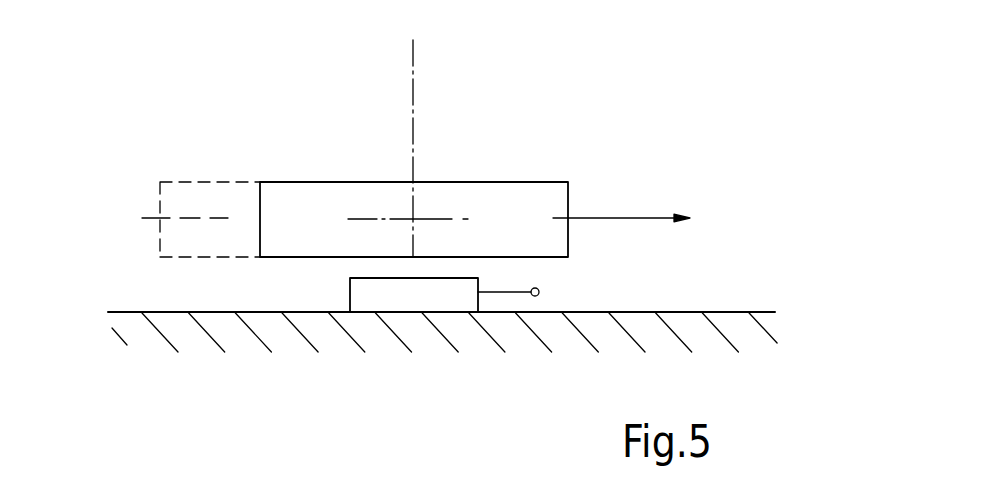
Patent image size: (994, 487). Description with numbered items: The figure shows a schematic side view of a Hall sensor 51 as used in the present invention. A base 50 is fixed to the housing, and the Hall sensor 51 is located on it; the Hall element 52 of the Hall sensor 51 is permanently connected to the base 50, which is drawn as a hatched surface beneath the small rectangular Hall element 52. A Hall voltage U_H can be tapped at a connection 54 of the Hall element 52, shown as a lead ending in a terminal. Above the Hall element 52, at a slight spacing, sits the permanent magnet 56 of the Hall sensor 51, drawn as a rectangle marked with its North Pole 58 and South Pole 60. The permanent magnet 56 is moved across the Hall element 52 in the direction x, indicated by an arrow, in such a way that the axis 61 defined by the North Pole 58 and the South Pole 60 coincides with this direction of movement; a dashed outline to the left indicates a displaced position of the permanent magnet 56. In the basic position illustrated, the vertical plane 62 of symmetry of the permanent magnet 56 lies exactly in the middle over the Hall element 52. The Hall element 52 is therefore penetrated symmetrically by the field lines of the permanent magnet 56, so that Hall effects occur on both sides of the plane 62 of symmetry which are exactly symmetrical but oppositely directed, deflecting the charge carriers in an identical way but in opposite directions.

The base 50 is at (740, 327).
The Hall sensor 51 is at (213, 155).
The Hall element 52 is at (410, 292).
The connection 54 is at (540, 312).
The permanent magnet 56 is at (506, 176).
The North Pole 58 is at (280, 205).
The South Pole 60 is at (563, 198).
The axis 61 is at (402, 217).
The plane of symmetry 62 is at (413, 92).